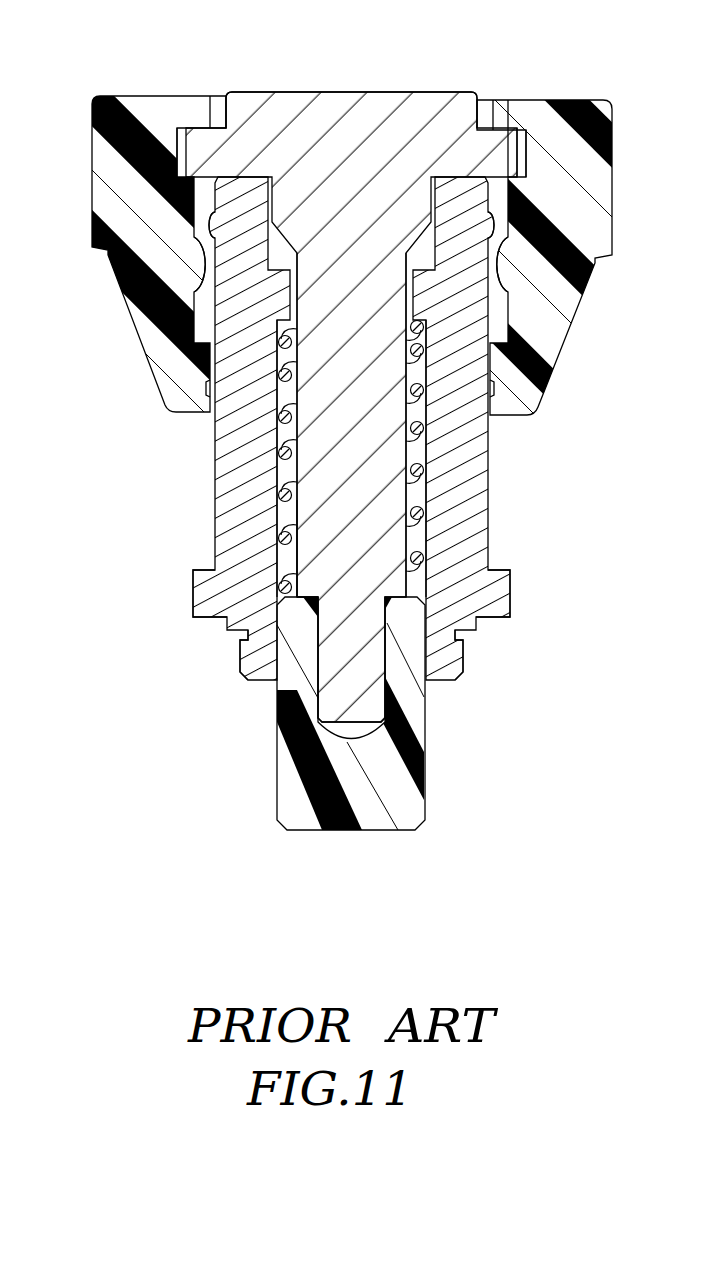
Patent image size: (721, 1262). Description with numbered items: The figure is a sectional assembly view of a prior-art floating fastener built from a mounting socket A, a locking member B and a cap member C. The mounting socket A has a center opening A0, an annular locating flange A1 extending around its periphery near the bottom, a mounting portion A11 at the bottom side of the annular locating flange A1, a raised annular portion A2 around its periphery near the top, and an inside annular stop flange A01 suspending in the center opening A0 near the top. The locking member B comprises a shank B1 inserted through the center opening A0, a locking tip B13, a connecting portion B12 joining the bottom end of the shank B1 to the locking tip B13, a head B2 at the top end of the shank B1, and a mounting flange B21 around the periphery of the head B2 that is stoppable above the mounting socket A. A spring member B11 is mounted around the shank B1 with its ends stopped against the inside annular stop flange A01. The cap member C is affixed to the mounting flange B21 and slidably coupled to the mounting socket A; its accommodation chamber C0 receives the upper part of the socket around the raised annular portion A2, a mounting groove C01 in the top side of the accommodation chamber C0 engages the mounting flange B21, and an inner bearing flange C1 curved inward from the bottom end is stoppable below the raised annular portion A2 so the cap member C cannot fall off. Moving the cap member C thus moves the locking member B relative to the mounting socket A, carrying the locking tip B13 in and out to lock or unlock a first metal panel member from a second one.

The mounting socket A is at (470, 497).
The center opening A0 is at (438, 455).
The inside annular stop flange A01 is at (413, 294).
The annular locating flange A1 is at (493, 600).
The mounting portion A11 is at (493, 637).
The raised annular portion A2 is at (493, 222).
The locking member B is at (391, 78).
The shank B1 is at (317, 481).
The spring member B11 is at (292, 537).
The connecting portion B12 is at (340, 710).
The locking tip B13 is at (300, 793).
The head B2 is at (288, 100).
The mounting flange B21 is at (505, 150).
The cap member C is at (103, 157).
The accommodation chamber C0 is at (197, 247).
The mounting groove C01 is at (183, 145).
The inner bearing flange C1 is at (207, 390).